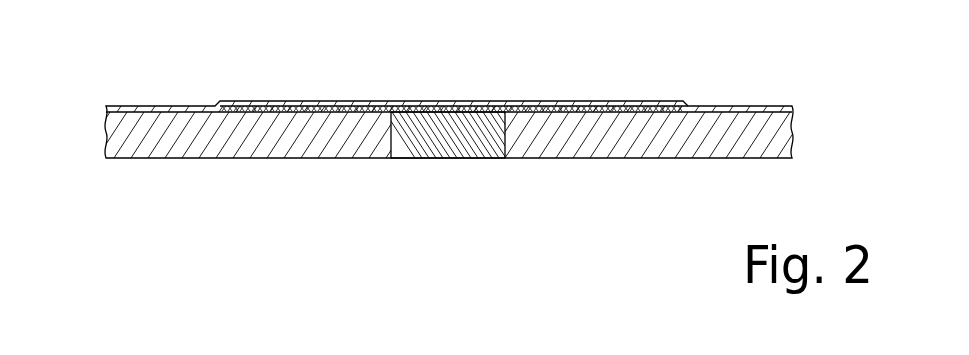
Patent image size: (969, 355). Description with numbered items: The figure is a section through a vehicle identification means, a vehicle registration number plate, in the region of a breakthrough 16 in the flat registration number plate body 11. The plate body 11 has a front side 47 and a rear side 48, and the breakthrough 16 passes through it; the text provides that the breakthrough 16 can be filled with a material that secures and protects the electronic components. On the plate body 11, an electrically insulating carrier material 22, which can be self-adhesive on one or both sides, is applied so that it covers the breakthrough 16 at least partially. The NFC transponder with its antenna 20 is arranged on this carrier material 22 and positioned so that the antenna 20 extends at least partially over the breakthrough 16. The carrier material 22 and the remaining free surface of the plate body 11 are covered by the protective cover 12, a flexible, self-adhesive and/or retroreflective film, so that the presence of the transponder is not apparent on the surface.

The front side 47 is at (118, 88).
The rear side 48 is at (176, 181).
The registration number plate body 11 is at (732, 132).
The protective cover 12 is at (165, 105).
The antenna 20 is at (618, 105).
The carrier material 22 is at (333, 108).
The breakthrough 16 is at (440, 138).